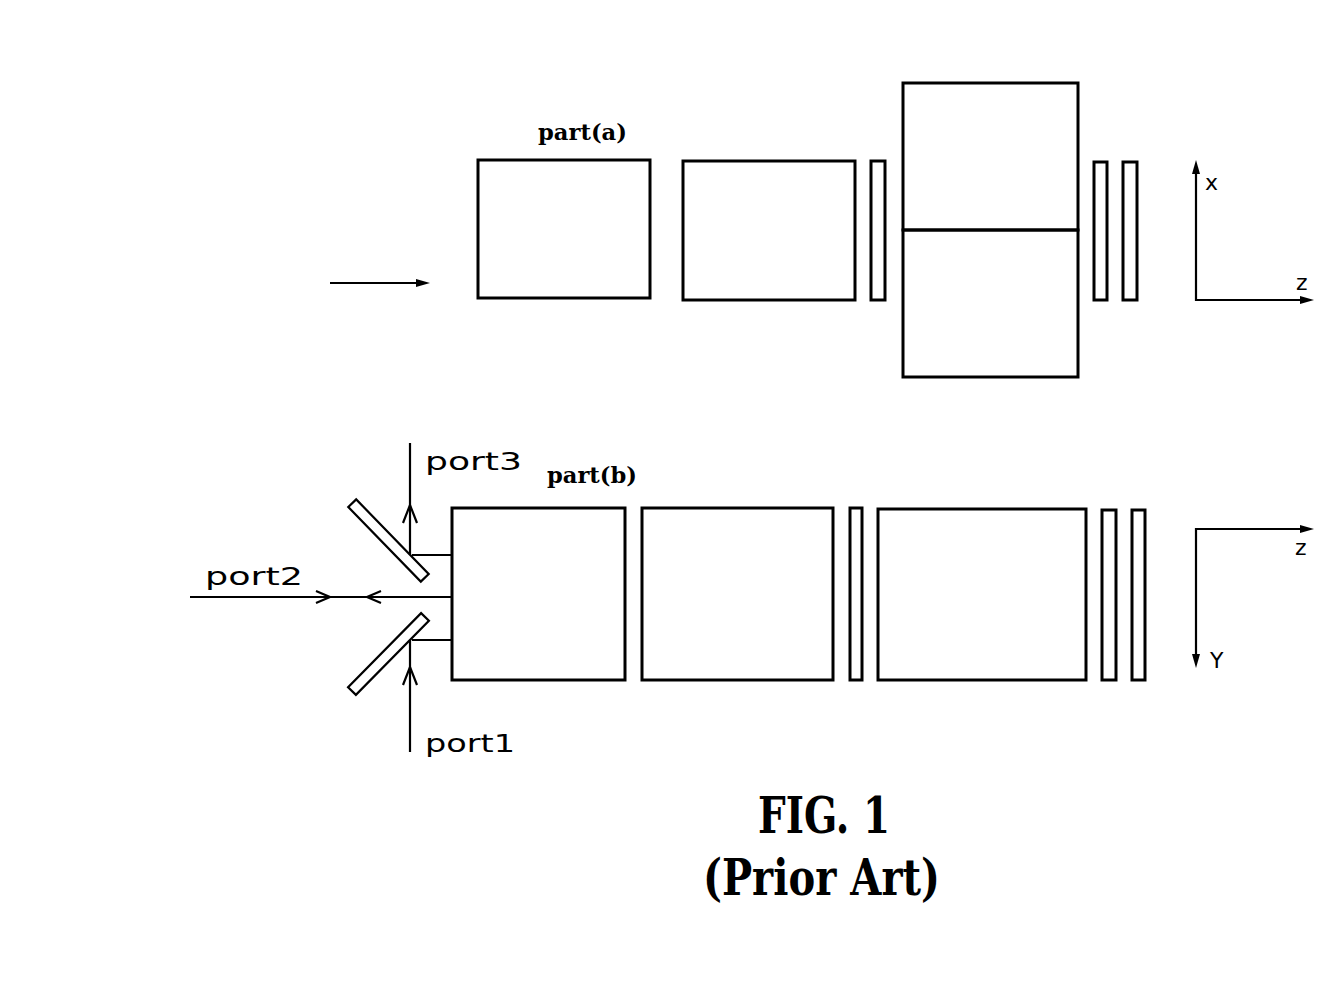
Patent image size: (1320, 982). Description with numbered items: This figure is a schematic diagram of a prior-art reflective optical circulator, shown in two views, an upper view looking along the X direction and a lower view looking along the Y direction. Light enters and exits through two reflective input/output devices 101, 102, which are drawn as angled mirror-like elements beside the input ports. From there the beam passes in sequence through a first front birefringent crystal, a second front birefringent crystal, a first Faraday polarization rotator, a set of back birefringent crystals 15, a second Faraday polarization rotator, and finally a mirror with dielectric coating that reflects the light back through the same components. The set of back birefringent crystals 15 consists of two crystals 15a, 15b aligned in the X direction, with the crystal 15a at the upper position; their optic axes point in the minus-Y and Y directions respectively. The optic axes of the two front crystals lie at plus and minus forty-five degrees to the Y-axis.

The set of back birefringent crystals 15 is at (970, 645).
The upper back birefringent crystal 15a is at (980, 103).
The lower back birefringent crystal 15b is at (997, 353).
The reflective input/output device 101 is at (362, 678).
The reflective input/output device 102 is at (355, 503).